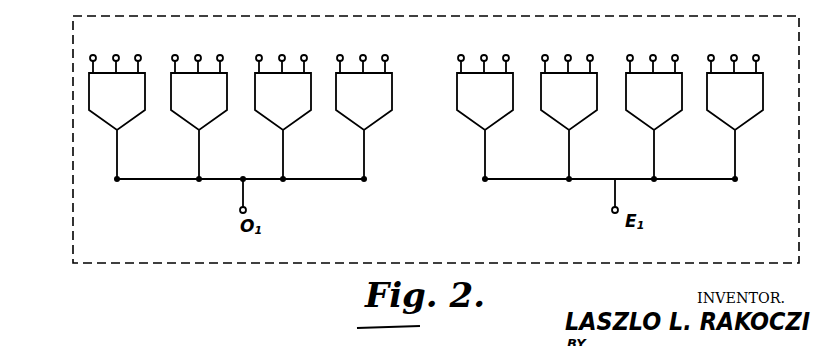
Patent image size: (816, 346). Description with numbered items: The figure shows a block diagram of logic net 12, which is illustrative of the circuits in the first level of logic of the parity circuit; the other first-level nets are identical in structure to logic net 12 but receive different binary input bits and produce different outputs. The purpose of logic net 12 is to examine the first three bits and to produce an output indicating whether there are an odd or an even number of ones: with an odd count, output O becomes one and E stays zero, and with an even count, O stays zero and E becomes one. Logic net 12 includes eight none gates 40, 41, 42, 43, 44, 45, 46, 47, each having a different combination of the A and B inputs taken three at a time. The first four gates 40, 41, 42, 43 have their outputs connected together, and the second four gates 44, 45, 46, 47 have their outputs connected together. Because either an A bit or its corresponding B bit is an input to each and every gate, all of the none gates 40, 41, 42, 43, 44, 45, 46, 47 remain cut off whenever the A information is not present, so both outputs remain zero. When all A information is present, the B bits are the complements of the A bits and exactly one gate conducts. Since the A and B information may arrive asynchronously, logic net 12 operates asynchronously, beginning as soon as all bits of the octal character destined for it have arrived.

The logic net 12 is at (268, 265).
The none gate 40 is at (132, 119).
The none gate 41 is at (214, 119).
The none gate 42 is at (298, 119).
The none gate 43 is at (379, 119).
The none gate 44 is at (500, 119).
The none gate 45 is at (584, 119).
The none gate 46 is at (669, 119).
The none gate 47 is at (750, 119).